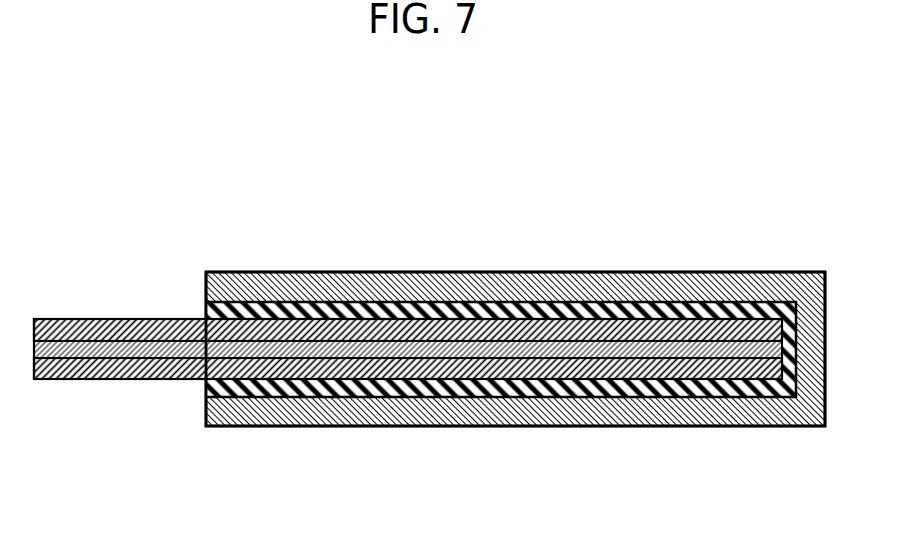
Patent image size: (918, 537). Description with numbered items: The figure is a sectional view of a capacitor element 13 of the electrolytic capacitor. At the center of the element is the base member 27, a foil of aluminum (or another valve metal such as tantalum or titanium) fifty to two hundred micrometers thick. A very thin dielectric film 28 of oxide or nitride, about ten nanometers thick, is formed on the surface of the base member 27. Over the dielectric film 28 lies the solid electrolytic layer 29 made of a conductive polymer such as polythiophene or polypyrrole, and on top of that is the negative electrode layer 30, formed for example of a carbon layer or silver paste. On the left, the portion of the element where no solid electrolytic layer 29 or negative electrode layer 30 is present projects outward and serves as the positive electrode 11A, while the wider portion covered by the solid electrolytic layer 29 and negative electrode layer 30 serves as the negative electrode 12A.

The negative electrode layer 30 is at (329, 287).
The solid electrolytic layer 29 is at (412, 308).
The dielectric film 28 is at (613, 325).
The base member 27 is at (675, 347).
The element 13 is at (797, 270).
The positive electrode 11A is at (203, 398).
The negative electrode 12A is at (823, 440).